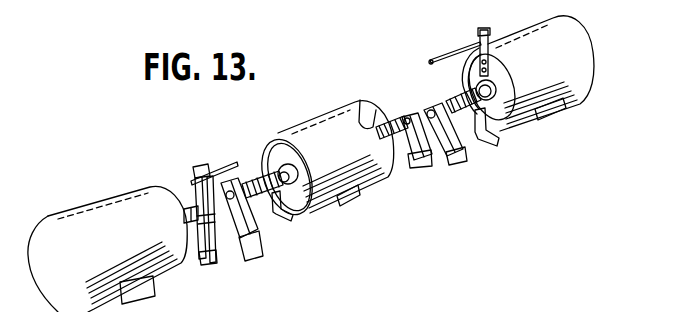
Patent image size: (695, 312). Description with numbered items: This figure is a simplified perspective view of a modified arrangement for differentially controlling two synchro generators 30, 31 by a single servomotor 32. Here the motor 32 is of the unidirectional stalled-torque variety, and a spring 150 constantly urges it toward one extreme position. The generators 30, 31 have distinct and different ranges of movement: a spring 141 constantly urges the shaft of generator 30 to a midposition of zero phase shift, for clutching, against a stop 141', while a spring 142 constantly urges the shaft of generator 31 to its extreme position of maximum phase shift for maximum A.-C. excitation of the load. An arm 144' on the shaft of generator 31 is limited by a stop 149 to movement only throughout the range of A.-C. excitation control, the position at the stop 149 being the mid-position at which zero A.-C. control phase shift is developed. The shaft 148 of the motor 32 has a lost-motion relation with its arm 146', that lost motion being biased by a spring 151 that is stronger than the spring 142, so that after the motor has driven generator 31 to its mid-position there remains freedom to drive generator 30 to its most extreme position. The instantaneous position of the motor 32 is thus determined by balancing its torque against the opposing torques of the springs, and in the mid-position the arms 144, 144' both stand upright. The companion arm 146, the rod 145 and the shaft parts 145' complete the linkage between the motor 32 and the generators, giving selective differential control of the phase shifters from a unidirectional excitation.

The synchro generator 30 is at (133, 247).
The synchro generator 31 is at (555, 74).
The servomotor 32 is at (345, 151).
The spring 141 is at (165, 191).
The stop 141' is at (208, 280).
The spring 142 is at (470, 128).
The arm 144 is at (189, 199).
The arm 144' is at (498, 146).
The connecting rod 145 is at (214, 158).
The threaded shaft with nuts 145' is at (465, 144).
The hinged bracket 146 is at (271, 226).
The arm 146' is at (447, 161).
The shaft 148 is at (268, 172).
The stop 149 is at (441, 58).
The spring 150 is at (278, 213).
The spring 151 is at (410, 161).